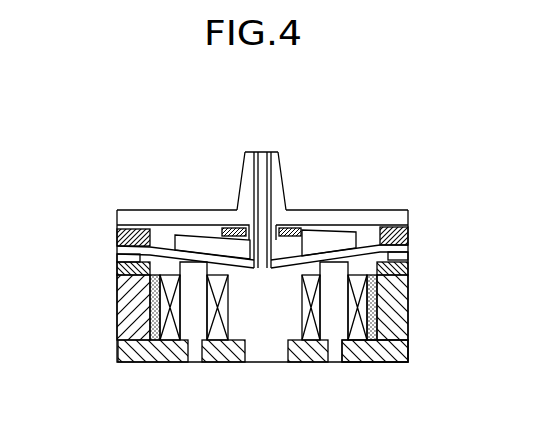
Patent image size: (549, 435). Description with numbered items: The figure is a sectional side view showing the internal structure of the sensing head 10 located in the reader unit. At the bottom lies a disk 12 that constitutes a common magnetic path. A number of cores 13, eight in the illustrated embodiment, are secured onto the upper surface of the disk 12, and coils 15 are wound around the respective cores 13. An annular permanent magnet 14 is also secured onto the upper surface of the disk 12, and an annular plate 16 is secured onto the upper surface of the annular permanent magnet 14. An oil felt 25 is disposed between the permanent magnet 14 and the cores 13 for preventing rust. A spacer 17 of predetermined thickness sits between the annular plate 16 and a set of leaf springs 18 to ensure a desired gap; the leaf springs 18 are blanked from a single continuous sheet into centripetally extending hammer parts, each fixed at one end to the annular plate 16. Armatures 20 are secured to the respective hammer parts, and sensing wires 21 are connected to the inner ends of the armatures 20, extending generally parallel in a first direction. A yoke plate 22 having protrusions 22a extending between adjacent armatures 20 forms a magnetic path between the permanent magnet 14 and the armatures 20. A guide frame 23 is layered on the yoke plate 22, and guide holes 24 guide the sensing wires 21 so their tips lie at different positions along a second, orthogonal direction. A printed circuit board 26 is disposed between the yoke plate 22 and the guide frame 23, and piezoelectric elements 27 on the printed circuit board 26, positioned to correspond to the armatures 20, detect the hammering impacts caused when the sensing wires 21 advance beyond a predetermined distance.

The sensing head 10 is at (410, 196).
The disk 12 is at (402, 352).
The cores 13 is at (330, 334).
The annular permanent magnet 14 is at (402, 310).
The coils 15 is at (358, 334).
The annular plate 16 is at (402, 273).
The spacer 17 is at (400, 256).
The leaf springs 18 is at (130, 253).
The armatures 20 is at (328, 243).
The sensing wires 21 is at (267, 170).
The yoke plate 22 is at (400, 232).
The protrusions 22a is at (375, 225).
The guide frame 23 is at (216, 210).
The guide holes 24 is at (262, 153).
The oil felt 25 is at (374, 347).
The printed circuit board 26 is at (163, 223).
The piezoelectric elements 27 is at (292, 221).